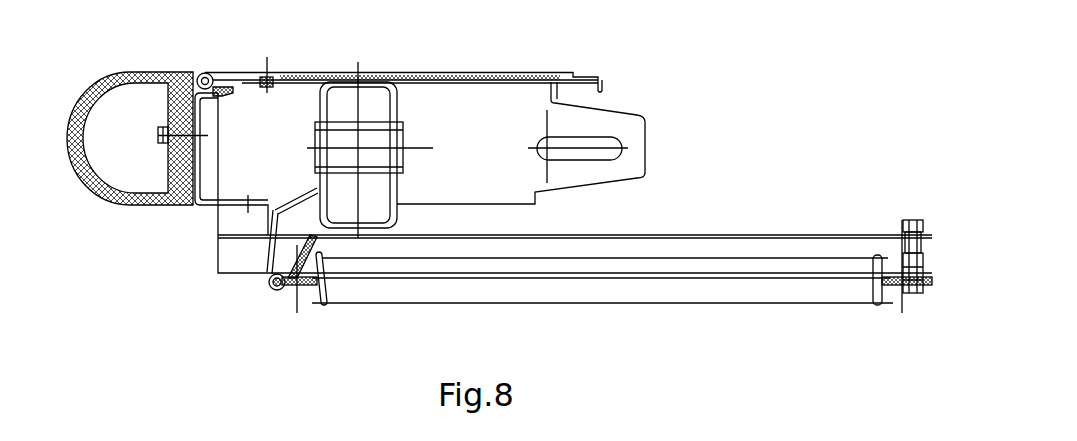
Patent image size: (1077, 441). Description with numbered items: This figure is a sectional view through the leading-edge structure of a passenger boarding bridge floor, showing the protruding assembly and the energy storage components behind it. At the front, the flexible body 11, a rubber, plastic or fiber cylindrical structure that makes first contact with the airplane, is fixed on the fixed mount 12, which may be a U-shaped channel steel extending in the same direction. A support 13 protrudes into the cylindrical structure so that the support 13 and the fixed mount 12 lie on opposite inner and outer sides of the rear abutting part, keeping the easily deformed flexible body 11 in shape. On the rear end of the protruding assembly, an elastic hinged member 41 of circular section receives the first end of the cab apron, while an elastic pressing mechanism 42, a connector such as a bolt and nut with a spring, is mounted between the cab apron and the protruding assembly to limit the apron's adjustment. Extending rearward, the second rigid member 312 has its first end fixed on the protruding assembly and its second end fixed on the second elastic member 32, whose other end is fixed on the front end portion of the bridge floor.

The flexible body 11 is at (76, 109).
The fixed mount 12 is at (210, 207).
The support 13 is at (168, 163).
The elastic hinged member 41 is at (204, 73).
The elastic pressing mechanism 42 is at (265, 77).
The second rigid member 312 is at (810, 250).
The second elastic member 32 is at (783, 290).